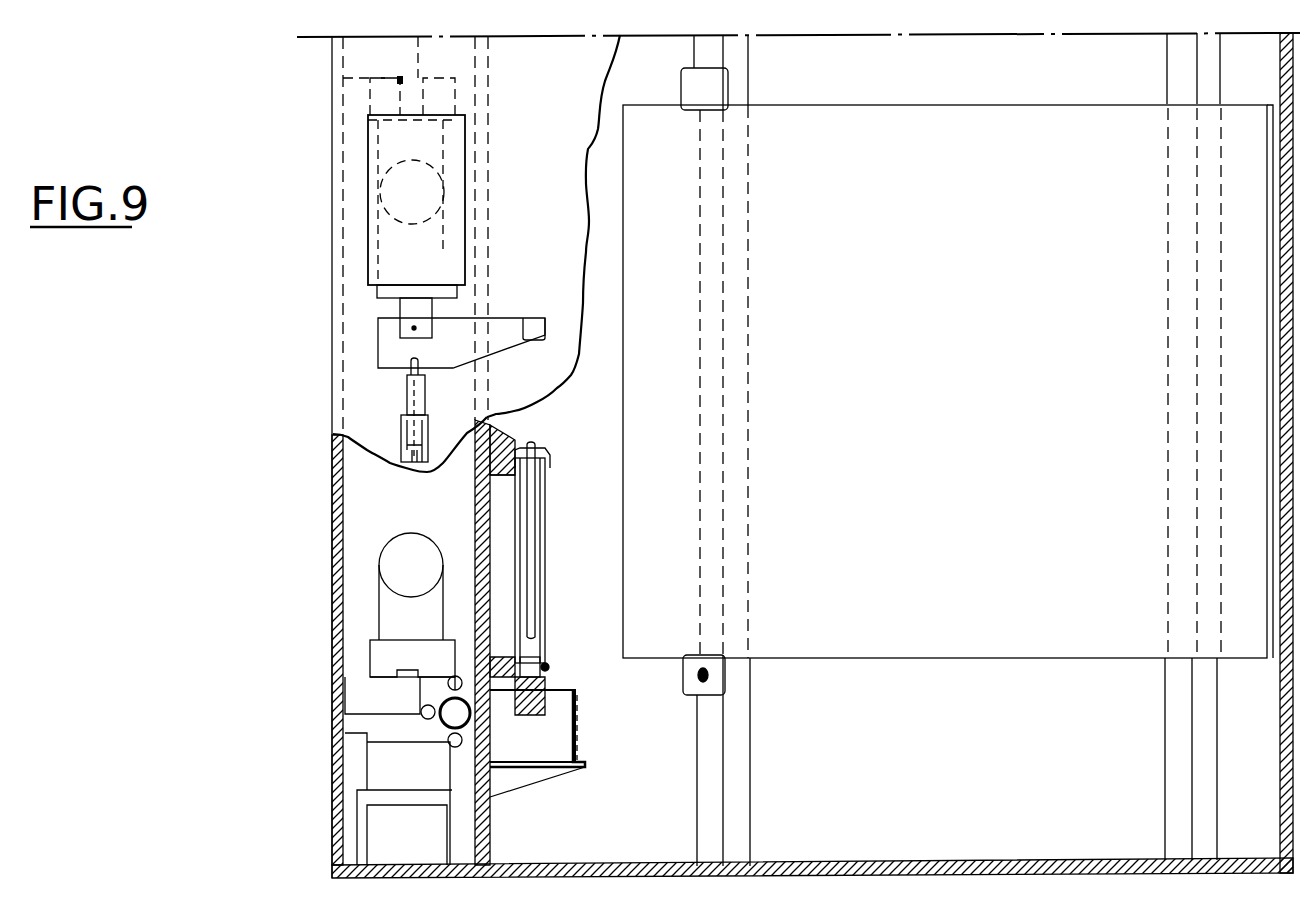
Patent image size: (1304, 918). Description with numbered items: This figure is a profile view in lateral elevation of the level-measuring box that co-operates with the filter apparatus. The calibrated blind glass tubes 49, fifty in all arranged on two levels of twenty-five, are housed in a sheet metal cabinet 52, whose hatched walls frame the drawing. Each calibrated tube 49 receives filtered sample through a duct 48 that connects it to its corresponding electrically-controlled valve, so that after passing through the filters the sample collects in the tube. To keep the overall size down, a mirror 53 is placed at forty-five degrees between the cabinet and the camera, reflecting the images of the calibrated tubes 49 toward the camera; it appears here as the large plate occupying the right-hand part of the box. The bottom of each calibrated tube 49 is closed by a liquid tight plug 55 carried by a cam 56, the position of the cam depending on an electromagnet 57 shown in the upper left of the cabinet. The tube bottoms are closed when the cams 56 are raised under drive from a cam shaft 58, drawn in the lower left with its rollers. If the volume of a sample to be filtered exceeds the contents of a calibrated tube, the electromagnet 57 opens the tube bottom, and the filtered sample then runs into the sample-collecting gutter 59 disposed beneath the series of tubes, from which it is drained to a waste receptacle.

The sheet metal cabinet 52 is at (329, 412).
The electromagnet 57 is at (385, 245).
The duct 48 is at (532, 500).
The calibrated blind glass tube 49 is at (547, 556).
The liquid tight plug 55 is at (550, 676).
The cam 56 is at (545, 667).
The sample-collecting gutter 59 is at (578, 730).
The cam shaft 58 is at (445, 740).
The mirror 53 is at (929, 640).